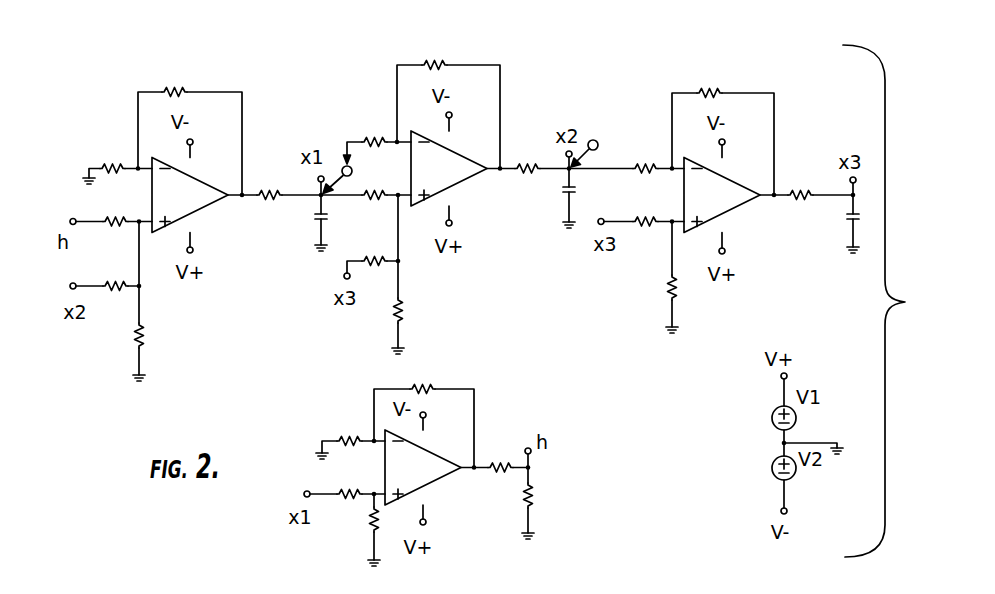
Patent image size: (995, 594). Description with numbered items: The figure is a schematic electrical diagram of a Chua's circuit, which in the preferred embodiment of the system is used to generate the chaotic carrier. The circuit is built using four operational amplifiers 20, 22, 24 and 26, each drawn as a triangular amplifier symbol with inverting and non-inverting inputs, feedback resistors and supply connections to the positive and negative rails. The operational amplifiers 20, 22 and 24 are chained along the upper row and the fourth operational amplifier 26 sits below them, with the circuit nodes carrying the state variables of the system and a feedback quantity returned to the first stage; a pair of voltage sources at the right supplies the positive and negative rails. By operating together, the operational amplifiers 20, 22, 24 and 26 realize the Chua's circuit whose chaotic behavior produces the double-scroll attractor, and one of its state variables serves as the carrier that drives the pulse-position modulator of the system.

The operational amplifier 20 is at (203, 206).
The operational amplifier 22 is at (463, 182).
The operational amplifier 24 is at (740, 205).
The operational amplifier 26 is at (443, 457).